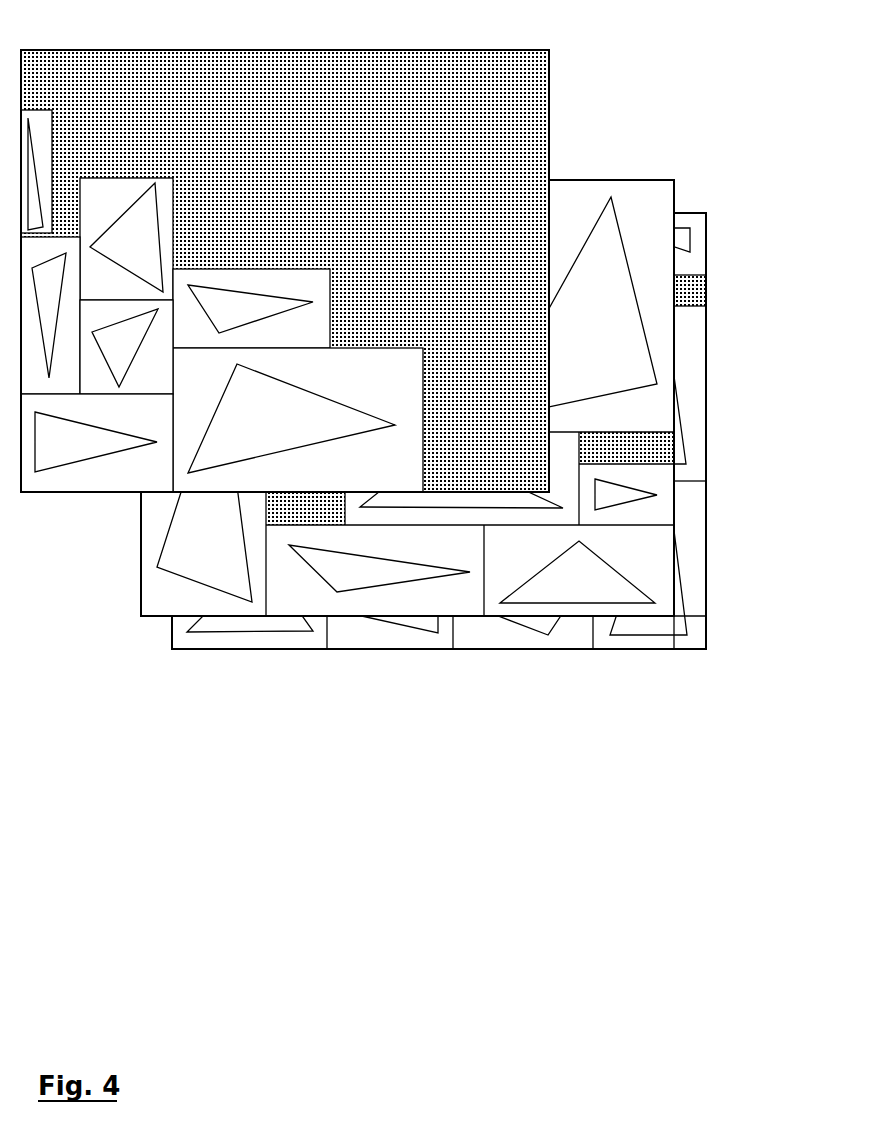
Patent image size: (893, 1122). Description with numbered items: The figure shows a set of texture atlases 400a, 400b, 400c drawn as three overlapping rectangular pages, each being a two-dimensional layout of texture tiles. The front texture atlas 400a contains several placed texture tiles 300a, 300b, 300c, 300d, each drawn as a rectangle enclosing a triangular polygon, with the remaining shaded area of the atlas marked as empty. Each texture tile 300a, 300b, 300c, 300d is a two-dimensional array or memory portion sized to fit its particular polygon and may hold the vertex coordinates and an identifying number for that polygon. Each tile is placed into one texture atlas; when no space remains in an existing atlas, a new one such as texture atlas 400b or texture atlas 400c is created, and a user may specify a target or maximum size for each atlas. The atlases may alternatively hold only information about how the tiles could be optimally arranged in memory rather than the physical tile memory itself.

The texture tile 300a is at (51, 127).
The texture tile 300b is at (173, 202).
The texture tile 300c is at (330, 285).
The texture tile 300d is at (423, 383).
The texture atlas 400a is at (333, 271).
The texture atlas 400b is at (573, 178).
The texture atlas 400c is at (688, 207).